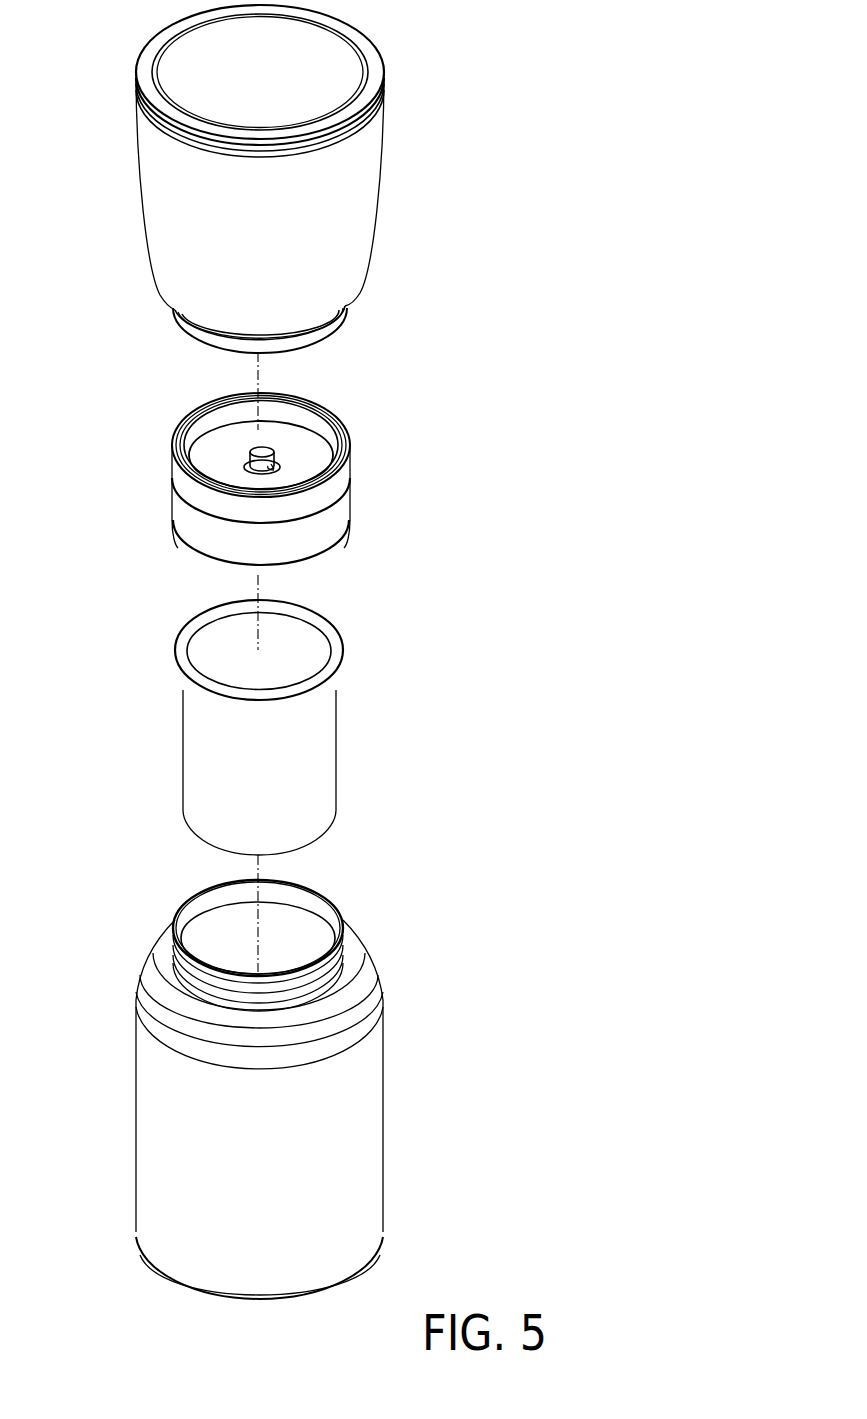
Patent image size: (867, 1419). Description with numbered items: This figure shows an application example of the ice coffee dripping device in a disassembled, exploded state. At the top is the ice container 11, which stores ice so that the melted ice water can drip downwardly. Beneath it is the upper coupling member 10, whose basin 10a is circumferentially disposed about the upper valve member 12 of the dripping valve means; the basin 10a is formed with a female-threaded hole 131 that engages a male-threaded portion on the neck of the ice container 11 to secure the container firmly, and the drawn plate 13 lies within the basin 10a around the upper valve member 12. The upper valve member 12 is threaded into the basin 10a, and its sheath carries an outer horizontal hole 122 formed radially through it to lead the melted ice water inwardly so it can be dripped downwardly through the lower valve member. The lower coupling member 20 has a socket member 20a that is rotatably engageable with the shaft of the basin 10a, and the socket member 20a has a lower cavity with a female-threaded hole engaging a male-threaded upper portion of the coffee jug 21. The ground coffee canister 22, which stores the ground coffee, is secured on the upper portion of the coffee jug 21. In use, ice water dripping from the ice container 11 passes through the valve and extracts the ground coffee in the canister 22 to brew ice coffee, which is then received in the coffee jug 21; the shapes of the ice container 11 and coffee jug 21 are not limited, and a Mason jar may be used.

The upper coupling member 10 is at (252, 431).
The basin 10a is at (202, 490).
The ice container 11 is at (357, 232).
The upper valve member 12 is at (274, 467).
The outer horizontal hole 122 is at (278, 472).
The top plate 13 is at (250, 430).
The female-threaded hole 131 is at (323, 428).
The lower coupling member 20 is at (269, 899).
The socket member 20a is at (243, 547).
The coffee jug 21 is at (143, 1012).
The ground coffee canister 22 is at (332, 702).